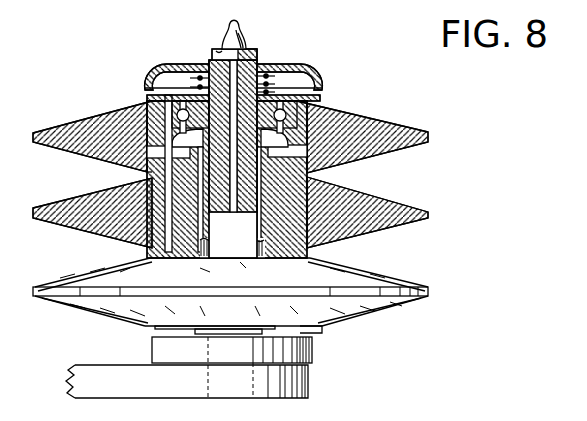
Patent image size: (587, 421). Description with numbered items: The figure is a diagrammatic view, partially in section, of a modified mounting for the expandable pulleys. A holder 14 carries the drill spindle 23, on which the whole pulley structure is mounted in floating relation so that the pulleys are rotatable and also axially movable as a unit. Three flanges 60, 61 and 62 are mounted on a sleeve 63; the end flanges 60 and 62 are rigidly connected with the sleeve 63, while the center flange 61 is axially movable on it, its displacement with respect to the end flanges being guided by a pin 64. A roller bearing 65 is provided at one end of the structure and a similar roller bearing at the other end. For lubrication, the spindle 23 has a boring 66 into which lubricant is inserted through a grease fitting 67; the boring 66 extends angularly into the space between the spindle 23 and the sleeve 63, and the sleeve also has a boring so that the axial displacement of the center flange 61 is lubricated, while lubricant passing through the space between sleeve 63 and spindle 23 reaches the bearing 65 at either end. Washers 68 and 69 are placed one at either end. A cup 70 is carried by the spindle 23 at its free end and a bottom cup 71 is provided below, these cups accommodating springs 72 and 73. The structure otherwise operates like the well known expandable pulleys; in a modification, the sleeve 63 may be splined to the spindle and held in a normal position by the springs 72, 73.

The holder 14 is at (310, 382).
The drill spindle 23 is at (257, 62).
The end flange 60 is at (425, 127).
The center flange 61 is at (421, 211).
The end flange 62 is at (409, 288).
The sleeve 63 is at (340, 126).
The pin 64 is at (165, 178).
The roller bearing 65 is at (300, 108).
The boring 66 is at (230, 80).
The grease fitting 67 is at (243, 33).
The washer 68 is at (155, 96).
The washer 69 is at (313, 333).
The cup 70 is at (318, 53).
The bottom cup 71 is at (168, 350).
The spring 72 is at (199, 77).
The spring 73 is at (215, 333).